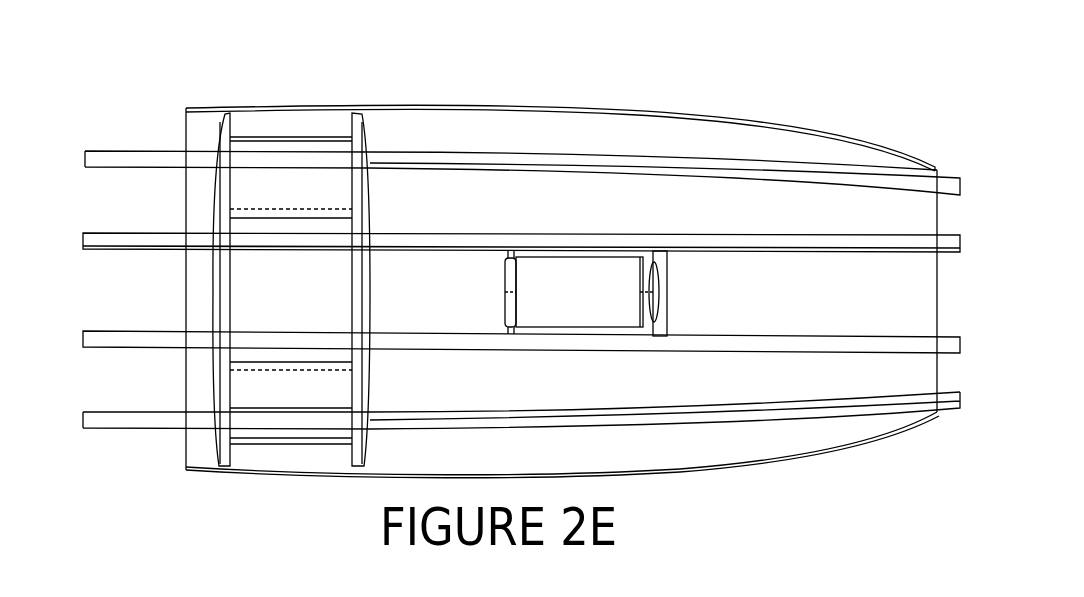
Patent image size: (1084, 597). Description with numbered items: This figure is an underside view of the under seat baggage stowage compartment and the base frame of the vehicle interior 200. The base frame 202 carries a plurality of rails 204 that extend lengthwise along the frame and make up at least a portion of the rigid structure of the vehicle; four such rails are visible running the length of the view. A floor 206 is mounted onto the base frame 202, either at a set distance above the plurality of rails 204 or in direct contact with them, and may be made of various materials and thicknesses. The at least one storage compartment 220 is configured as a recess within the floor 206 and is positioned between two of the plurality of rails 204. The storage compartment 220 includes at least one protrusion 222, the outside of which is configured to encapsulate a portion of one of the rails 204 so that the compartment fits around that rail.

The vehicle interior 200 is at (150, 45).
The base frame 202 is at (133, 439).
The plurality of rails 204 is at (131, 168).
The floor 206 is at (725, 142).
The storage compartment 220 is at (333, 200).
The protrusion 222 is at (253, 148).